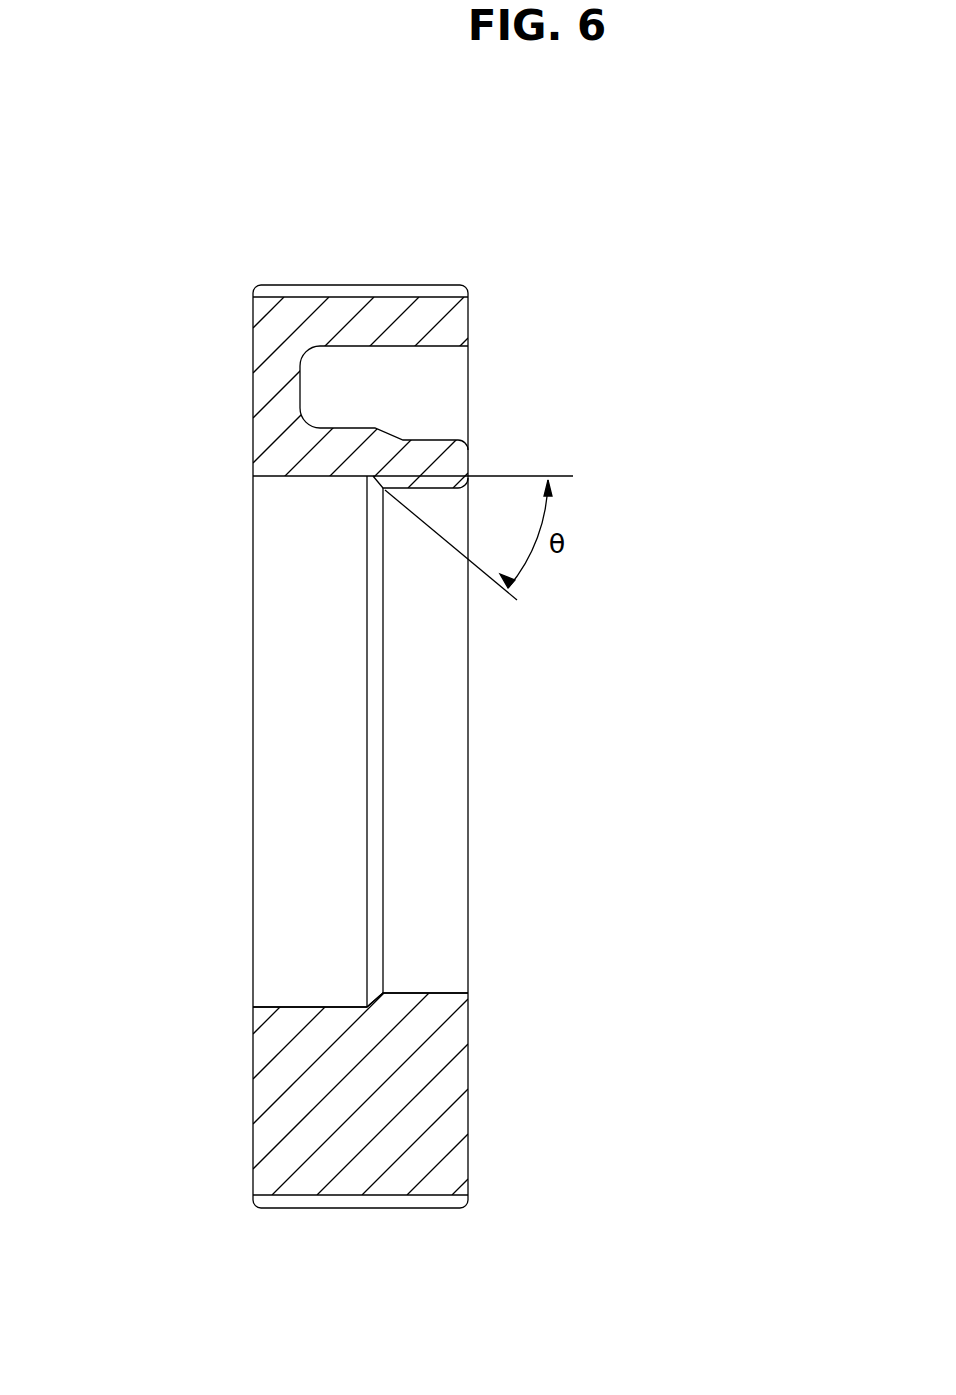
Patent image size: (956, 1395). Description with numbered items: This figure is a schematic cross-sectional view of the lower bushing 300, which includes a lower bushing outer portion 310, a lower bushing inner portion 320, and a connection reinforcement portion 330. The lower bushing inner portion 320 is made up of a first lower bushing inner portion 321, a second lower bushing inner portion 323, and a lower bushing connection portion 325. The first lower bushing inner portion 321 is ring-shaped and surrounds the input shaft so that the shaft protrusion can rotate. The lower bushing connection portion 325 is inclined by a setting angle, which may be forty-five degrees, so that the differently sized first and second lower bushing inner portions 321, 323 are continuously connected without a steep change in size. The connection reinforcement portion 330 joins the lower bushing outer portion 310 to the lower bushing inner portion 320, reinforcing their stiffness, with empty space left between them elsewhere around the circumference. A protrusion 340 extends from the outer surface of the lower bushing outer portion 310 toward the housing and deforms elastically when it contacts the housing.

The lower bushing 300 is at (675, 102).
The lower bushing outer portion 310 is at (428, 310).
The lower bushing inner portion 320 is at (267, 741).
The first lower bushing inner portion 321 is at (298, 478).
The second lower bushing inner portion 323 is at (437, 490).
The lower bushing connection portion 325 is at (370, 478).
The connection reinforcement portion 330 is at (438, 1088).
The protrusion 340 is at (325, 290).